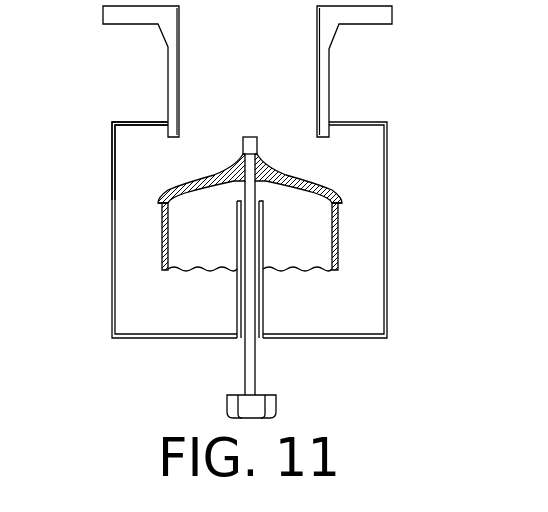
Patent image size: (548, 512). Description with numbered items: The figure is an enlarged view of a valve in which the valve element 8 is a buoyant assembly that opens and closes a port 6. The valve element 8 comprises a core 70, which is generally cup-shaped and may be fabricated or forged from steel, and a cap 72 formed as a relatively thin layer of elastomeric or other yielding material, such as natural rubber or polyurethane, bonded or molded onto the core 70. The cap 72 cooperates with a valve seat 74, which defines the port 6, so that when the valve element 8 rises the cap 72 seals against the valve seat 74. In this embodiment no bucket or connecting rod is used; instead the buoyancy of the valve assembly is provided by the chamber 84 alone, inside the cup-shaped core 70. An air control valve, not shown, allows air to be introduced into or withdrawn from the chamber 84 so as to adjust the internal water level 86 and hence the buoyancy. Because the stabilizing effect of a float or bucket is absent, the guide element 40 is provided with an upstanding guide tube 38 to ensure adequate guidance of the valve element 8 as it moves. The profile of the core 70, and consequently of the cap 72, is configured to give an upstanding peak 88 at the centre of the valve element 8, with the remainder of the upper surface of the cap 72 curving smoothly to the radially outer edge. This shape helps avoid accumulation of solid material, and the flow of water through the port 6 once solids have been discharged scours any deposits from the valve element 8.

The port 6 is at (329, 82).
The valve element 8 is at (347, 247).
The guide tube 38 is at (245, 370).
The guide element 40 is at (358, 338).
The core 70 is at (161, 238).
The cap 72 is at (320, 176).
The valve seat 74 is at (170, 140).
The chamber 84 is at (221, 241).
The internal water level 86 is at (297, 267).
The upstanding peak 88 is at (245, 137).